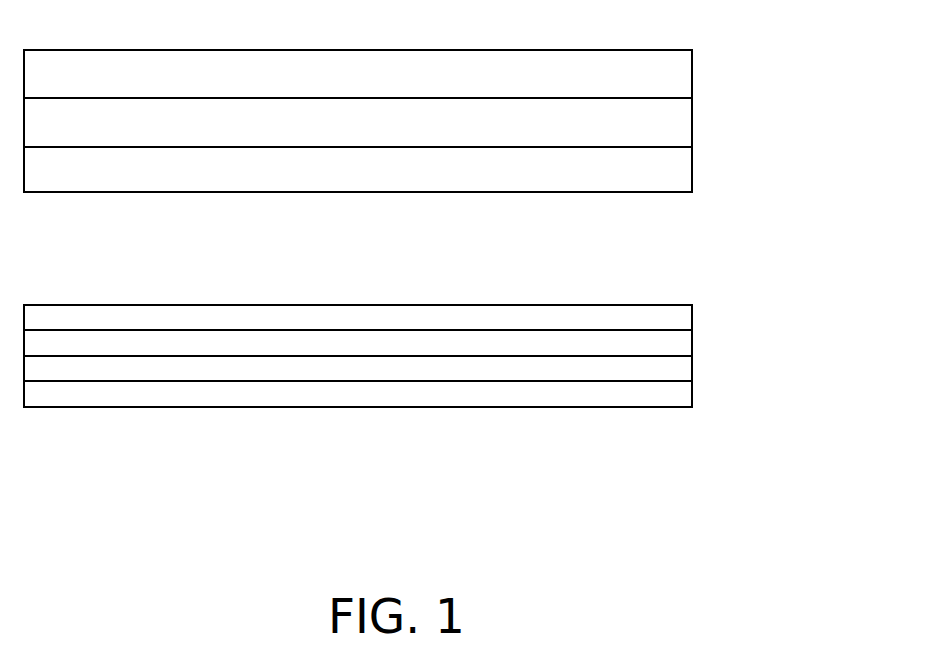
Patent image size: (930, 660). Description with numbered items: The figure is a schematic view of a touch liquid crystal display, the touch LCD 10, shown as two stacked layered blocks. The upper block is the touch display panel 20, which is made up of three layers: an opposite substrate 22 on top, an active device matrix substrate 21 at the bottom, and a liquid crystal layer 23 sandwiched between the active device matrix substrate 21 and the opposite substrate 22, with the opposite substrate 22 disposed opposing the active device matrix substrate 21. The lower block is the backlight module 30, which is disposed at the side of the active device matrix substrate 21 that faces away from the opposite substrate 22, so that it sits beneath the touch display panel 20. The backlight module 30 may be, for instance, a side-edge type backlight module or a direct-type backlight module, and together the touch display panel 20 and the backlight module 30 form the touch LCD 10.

The touch LCD 10 is at (764, 513).
The touch display panel 20 is at (426, 116).
The active device matrix substrate 21 is at (402, 174).
The opposite substrate 22 is at (678, 76).
The liquid crystal layer 23 is at (678, 127).
The backlight module 30 is at (725, 303).